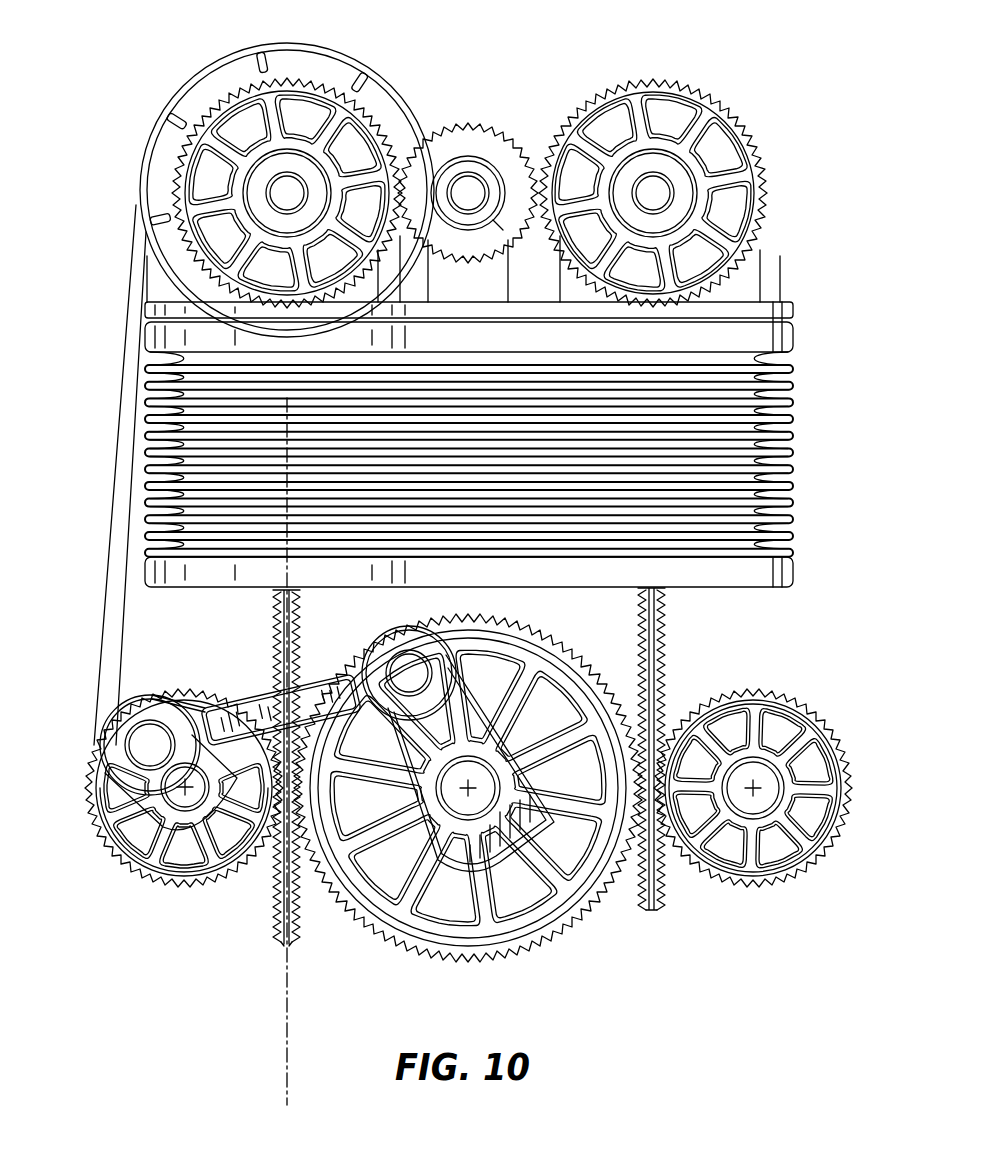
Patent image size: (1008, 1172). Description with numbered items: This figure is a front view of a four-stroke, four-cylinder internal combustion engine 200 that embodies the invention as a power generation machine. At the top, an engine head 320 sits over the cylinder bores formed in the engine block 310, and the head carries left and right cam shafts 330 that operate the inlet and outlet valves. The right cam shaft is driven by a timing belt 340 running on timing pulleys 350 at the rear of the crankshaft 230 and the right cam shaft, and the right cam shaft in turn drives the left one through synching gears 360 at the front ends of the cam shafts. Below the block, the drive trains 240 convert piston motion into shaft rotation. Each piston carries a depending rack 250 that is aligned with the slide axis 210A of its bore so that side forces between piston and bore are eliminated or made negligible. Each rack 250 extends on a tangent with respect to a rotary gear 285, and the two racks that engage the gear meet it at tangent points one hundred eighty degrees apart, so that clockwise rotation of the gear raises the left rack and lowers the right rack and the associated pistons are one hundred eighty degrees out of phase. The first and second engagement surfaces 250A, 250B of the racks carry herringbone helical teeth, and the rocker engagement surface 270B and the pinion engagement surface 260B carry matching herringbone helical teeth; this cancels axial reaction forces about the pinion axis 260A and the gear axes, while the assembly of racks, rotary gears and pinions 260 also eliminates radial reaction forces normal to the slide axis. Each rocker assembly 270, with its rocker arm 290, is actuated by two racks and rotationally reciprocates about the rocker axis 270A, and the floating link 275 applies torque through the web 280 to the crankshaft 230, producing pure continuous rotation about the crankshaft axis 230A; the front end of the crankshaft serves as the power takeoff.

The internal combustion engine 200 is at (115, 45).
The timing pulleys 350 is at (193, 106).
The synching gears 360 is at (586, 108).
The engine head 320 is at (786, 253).
The cam shafts 330 is at (273, 196).
The engine block 310 is at (790, 428).
The timing belt 340 is at (110, 482).
The slide axis 210A is at (283, 1025).
The drive trains 240 is at (266, 922).
The racks 250 is at (682, 660).
The first engagement surface 250A is at (634, 648).
The second engagement surface 250B is at (662, 635).
The pinions 260 is at (803, 743).
The pinion engagement surface 260B is at (686, 708).
The pinion axis 260A is at (760, 790).
The crankshaft 230 is at (143, 833).
The left pinion axis 230A is at (200, 800).
The webs 280 is at (163, 830).
The floating links 275 is at (265, 715).
The rocker assemblies 270 is at (586, 955).
The rocker engagement surface 270B is at (622, 897).
The rocker axis 270A is at (462, 792).
The rotary gears 285 is at (433, 905).
The rocker arms 290 is at (523, 820).